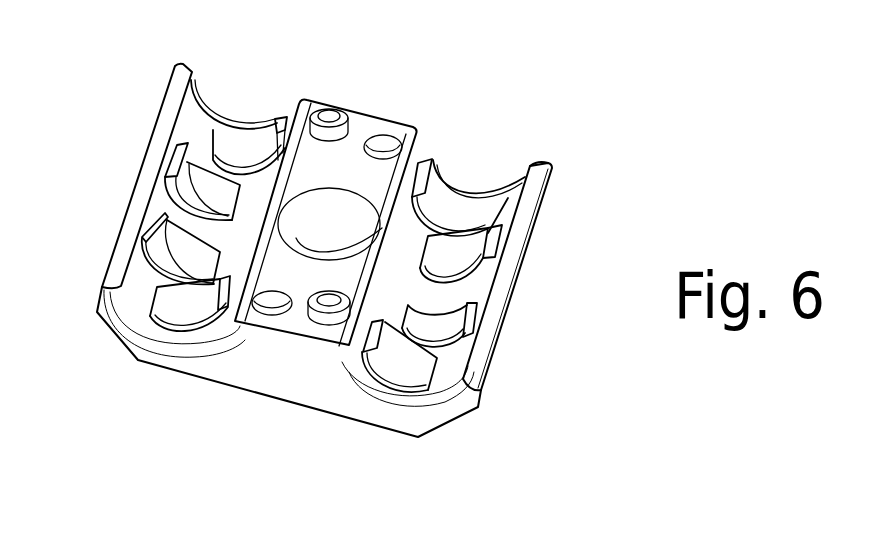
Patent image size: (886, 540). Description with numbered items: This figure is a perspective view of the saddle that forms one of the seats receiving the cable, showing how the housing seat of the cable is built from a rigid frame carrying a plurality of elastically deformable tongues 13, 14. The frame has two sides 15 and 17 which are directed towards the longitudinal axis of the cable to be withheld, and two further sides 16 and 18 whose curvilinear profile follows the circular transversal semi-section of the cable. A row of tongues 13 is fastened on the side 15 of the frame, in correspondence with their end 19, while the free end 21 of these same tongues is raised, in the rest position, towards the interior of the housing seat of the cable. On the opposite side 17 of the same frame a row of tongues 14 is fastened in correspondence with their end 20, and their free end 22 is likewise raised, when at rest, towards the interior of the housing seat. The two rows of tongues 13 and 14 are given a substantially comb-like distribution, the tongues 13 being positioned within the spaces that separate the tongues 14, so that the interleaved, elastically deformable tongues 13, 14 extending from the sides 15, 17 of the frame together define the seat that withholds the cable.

The tongues 13 is at (179, 170).
The tongues 14 is at (264, 148).
The side of the frame 15 is at (282, 177).
The side of the frame 16 is at (434, 407).
The side of the frame 17 is at (525, 212).
The side of the frame 18 is at (537, 163).
The end of the tongues 19 is at (422, 253).
The end of the tongues 20 is at (510, 195).
The free end of the tongues 21 is at (192, 177).
The free end of the tongues 22 is at (277, 125).